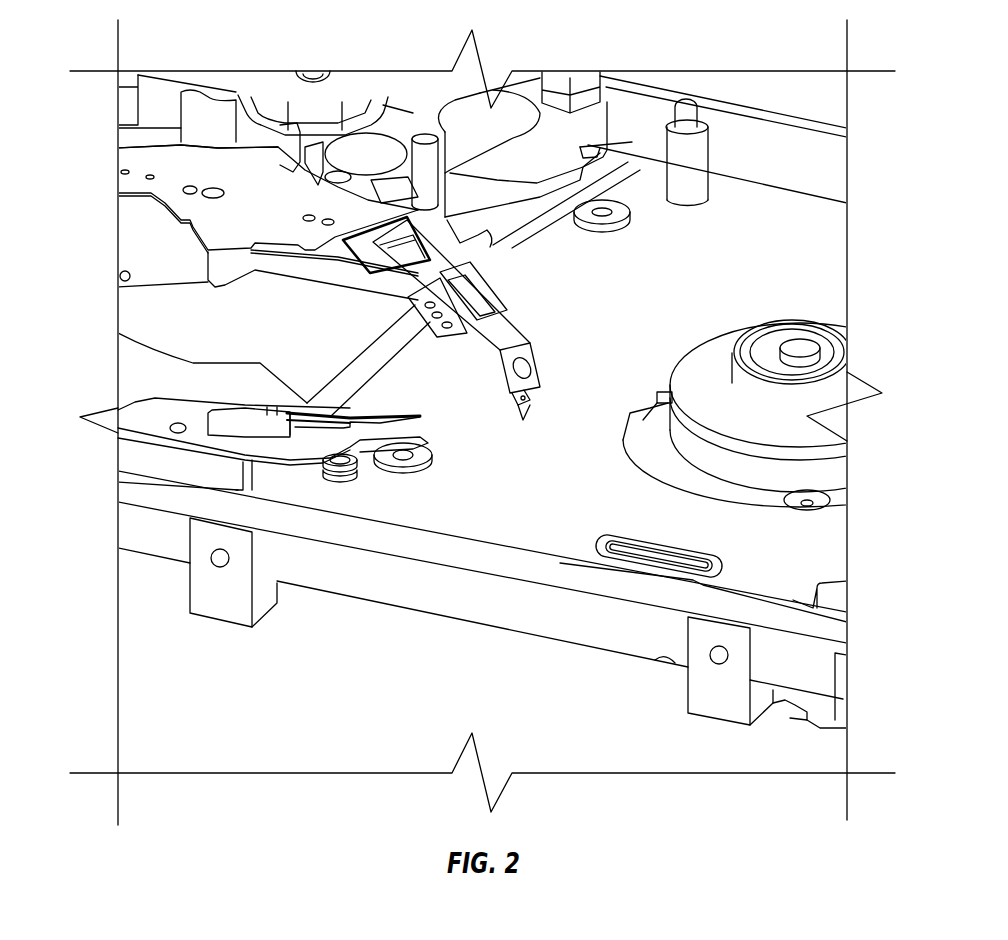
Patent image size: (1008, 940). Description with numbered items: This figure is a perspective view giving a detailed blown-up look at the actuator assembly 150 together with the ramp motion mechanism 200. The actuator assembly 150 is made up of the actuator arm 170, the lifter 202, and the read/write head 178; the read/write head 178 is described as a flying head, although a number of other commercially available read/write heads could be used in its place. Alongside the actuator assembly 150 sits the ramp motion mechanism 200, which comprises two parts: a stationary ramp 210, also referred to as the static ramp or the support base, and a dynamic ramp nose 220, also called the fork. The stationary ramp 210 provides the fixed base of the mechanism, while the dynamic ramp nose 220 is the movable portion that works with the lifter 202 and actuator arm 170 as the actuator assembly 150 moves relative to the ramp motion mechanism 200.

The actuator assembly 150 is at (640, 117).
The actuator arm 170 is at (512, 333).
The read/write head 178 is at (530, 398).
The lifter 202 is at (523, 407).
The ramp motion mechanism 200 is at (172, 413).
The stationary ramp 210 is at (265, 460).
The dynamic ramp nose 220 is at (420, 417).